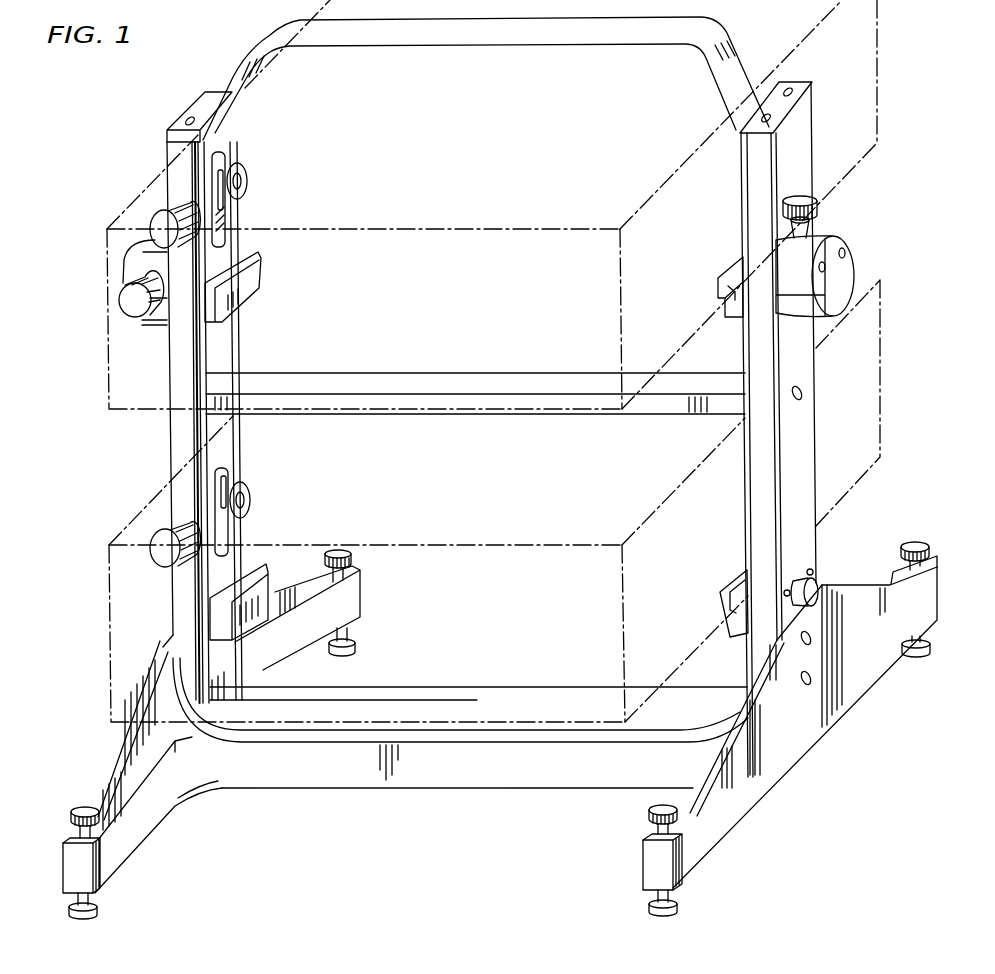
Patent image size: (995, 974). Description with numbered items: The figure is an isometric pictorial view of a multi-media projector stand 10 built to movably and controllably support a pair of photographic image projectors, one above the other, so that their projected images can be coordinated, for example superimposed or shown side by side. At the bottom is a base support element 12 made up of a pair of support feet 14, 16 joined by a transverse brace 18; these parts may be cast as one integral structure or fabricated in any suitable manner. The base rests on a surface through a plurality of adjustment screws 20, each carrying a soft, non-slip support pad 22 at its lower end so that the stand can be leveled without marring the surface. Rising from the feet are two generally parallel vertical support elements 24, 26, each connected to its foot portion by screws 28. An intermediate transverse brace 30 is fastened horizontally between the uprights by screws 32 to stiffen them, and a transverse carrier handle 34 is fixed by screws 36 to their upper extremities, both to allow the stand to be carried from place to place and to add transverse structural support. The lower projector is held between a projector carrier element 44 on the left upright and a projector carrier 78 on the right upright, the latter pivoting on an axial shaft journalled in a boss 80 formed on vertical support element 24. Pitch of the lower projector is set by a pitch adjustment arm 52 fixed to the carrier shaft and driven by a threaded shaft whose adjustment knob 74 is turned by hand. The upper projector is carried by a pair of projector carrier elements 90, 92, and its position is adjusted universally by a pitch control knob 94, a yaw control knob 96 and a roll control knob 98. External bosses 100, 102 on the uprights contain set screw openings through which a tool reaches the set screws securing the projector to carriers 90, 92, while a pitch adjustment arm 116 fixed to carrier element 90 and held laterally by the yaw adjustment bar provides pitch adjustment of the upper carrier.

The multi-media projector stand 10 is at (889, 198).
The base support element 12 is at (777, 815).
The support foot 14 is at (800, 735).
The support foot 16 is at (150, 818).
The transverse brace 18 is at (472, 780).
The adjustment screw 20 is at (86, 808).
The support pad 22 is at (98, 918).
The vertical support element 24 is at (808, 440).
The vertical support element 26 is at (178, 458).
The screw 28 is at (809, 677).
The intermediate transverse brace 30 is at (393, 381).
The screw 32 is at (826, 267).
The transverse carrier handle 34 is at (455, 47).
The screw 36 is at (769, 117).
The projector carrier element 44 is at (260, 588).
The pitch adjustment arm 52 is at (231, 533).
The adjustment knob 74 is at (157, 550).
The projector carrier 78 is at (720, 603).
The boss 80 is at (815, 588).
The projector carrier element 90 is at (250, 283).
The projector carrier element 92 is at (727, 300).
The pitch control knob 94 is at (157, 228).
The yaw control knob 96 is at (128, 305).
The roll control knob 98 is at (805, 203).
The external boss 100 is at (845, 288).
The external boss 102 is at (135, 263).
The pitch adjustment arm 116 is at (225, 215).